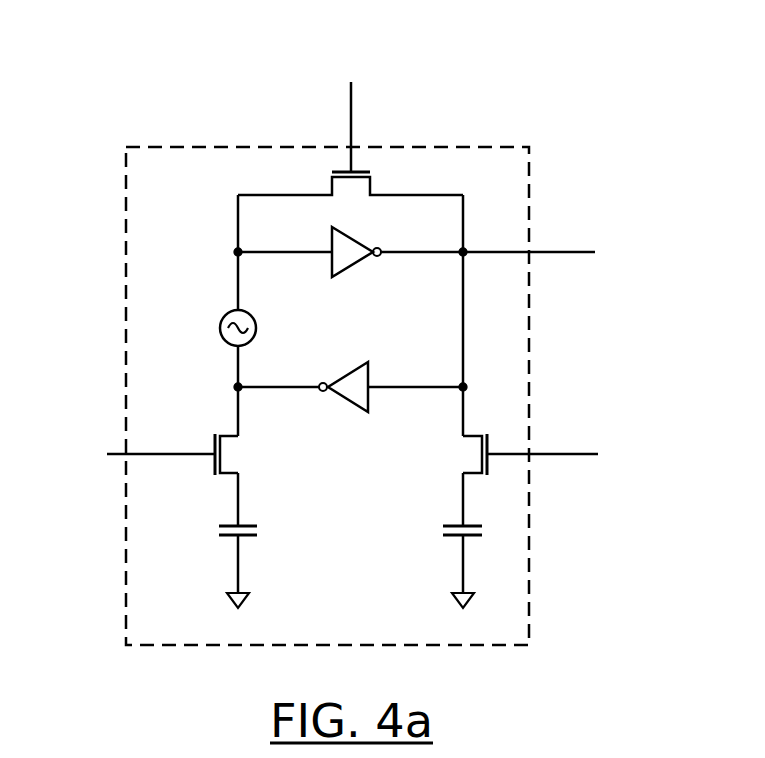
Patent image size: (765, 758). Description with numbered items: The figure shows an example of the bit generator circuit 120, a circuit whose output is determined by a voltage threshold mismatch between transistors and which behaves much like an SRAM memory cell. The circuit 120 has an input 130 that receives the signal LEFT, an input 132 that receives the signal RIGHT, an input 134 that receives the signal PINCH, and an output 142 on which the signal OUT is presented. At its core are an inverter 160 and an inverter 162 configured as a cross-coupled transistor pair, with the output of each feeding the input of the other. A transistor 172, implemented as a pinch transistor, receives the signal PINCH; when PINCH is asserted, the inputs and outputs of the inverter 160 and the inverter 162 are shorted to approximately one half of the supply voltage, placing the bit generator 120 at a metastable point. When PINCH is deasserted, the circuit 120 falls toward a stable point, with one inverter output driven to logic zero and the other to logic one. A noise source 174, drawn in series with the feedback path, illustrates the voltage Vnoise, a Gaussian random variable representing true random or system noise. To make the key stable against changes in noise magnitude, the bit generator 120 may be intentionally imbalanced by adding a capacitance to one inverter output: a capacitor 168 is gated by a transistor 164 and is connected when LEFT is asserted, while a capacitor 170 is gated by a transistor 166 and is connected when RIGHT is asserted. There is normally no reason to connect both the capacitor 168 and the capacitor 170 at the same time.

The bit generator circuit 120 is at (176, 145).
The input 130 is at (125, 452).
The input 132 is at (530, 452).
The input 134 is at (351, 143).
The output 142 is at (529, 254).
The inverter 160 is at (358, 272).
The inverter 162 is at (335, 404).
The transistor 164 is at (250, 448).
The transistor 166 is at (451, 448).
The capacitor 168 is at (260, 531).
The capacitor 170 is at (446, 531).
The transistor 172 is at (323, 180).
The noise source 174 is at (220, 328).